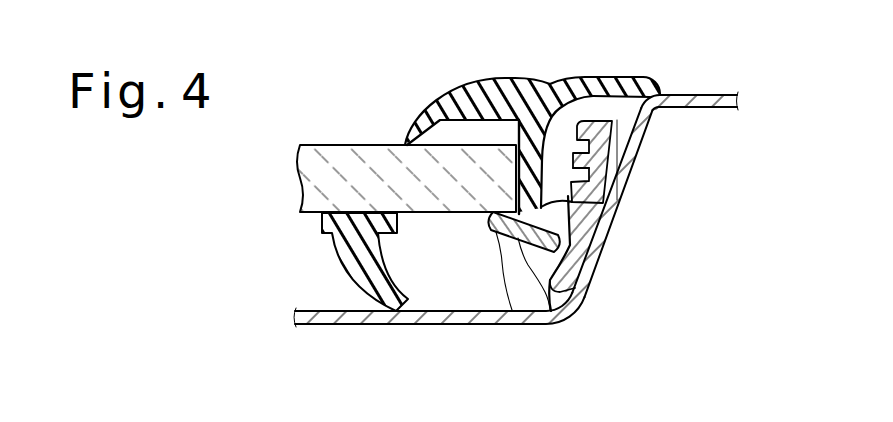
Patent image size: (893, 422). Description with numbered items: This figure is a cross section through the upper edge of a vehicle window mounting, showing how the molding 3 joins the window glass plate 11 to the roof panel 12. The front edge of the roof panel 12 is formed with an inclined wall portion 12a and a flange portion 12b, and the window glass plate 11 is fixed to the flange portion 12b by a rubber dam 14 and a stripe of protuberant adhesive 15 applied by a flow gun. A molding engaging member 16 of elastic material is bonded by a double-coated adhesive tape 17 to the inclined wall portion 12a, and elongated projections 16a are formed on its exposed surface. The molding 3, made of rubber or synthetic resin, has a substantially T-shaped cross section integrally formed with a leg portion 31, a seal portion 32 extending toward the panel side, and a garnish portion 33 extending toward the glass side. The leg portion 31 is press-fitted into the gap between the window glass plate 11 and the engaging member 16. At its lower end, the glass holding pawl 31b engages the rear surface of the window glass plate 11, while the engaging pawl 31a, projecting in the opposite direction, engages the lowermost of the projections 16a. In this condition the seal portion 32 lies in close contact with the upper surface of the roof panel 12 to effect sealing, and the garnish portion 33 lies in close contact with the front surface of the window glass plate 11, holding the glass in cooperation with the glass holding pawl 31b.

The molding 3 is at (525, 193).
The window glass plate 11 is at (326, 152).
The roof panel 12 is at (516, 217).
The inclined wall portion 12a is at (637, 158).
The flange portion 12b is at (352, 324).
The rubber dam 14 is at (360, 252).
The protuberant adhesive 15 is at (450, 282).
The molding engaging member 16 is at (600, 182).
The elongated projections 16a is at (577, 217).
The double-coated adhesive tape 17 is at (583, 223).
The leg portion 31 is at (547, 122).
The engaging pawl 31a is at (598, 260).
The glass holding pawl 31b is at (547, 318).
The seal portion 32 is at (597, 88).
The garnish portion 33 is at (470, 102).